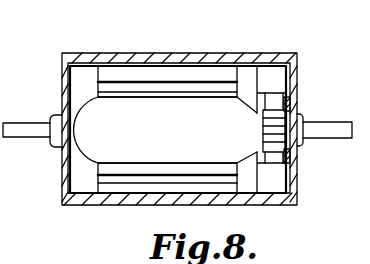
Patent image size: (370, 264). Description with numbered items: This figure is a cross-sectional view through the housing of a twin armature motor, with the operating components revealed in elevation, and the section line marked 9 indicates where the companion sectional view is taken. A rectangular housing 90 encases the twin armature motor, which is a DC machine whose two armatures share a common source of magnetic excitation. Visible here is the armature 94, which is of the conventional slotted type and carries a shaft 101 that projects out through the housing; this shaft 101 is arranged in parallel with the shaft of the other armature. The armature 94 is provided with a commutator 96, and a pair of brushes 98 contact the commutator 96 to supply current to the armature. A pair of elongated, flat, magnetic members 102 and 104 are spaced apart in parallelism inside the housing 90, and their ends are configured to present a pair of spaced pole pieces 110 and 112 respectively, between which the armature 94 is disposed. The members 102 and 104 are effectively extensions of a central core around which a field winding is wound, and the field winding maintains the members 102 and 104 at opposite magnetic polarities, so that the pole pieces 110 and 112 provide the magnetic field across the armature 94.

The section line 9- 9 is at (72, 53).
The rectangular housing 90 is at (280, 55).
The armature 94 is at (94, 144).
The commutator 96 is at (296, 104).
The brushes 98 is at (293, 108).
The shaft 101 is at (17, 126).
The magnetic member 102 is at (193, 72).
The magnetic member 104 is at (150, 199).
The pole piece 110 is at (135, 82).
The pole piece 112 is at (143, 170).